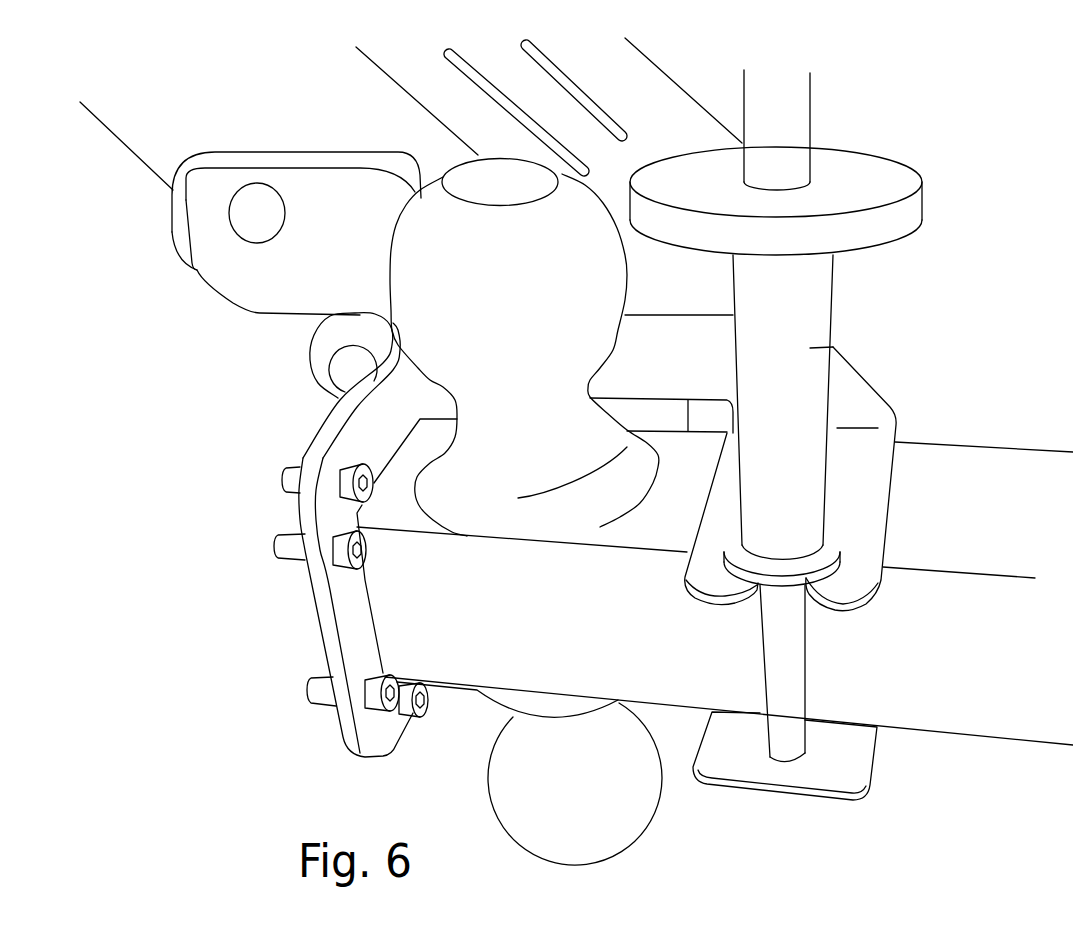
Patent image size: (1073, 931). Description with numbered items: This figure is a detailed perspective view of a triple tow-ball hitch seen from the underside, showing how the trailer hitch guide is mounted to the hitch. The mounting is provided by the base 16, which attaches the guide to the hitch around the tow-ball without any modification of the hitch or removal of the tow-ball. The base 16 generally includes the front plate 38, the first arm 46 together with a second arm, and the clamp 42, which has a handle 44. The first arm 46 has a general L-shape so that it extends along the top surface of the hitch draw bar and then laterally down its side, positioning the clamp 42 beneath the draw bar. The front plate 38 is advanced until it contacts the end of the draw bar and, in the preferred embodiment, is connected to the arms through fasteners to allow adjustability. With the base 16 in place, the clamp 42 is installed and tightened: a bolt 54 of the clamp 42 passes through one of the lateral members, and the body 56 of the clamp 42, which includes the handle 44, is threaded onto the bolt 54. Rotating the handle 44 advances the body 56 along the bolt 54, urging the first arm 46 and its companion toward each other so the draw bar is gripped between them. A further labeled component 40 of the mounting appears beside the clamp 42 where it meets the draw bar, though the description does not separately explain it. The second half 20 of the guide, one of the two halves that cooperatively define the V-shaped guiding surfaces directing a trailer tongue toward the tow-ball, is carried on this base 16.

The base 16 is at (927, 348).
The second half 20 is at (657, 90).
The front plate 38 is at (345, 448).
The clamp 40 is at (895, 415).
The clamp 42 is at (813, 292).
The handle 44 is at (870, 170).
The first arm 46 is at (650, 330).
The bolt 54 is at (792, 687).
The body 56 is at (810, 348).